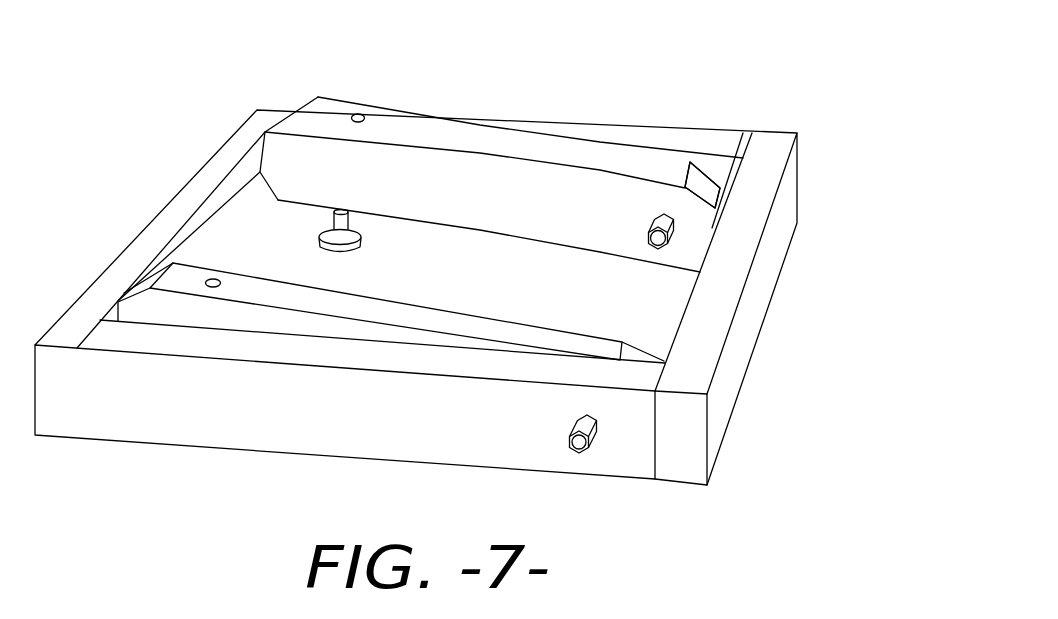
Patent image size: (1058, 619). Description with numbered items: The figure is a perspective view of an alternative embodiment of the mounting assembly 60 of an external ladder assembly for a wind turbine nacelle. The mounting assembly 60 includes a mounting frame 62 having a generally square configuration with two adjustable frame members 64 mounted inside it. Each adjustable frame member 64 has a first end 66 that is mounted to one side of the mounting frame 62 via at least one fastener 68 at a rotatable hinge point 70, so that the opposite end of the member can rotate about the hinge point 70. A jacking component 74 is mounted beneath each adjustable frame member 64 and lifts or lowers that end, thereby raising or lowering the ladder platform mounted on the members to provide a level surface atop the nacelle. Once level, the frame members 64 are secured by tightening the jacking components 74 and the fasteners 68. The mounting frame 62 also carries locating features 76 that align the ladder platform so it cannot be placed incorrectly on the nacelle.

The mounting assembly 60 is at (757, 90).
The mounting frame 62 is at (752, 191).
The adjustable frame member 64 is at (477, 177).
The first end 66 is at (658, 201).
The fastener 68 is at (300, 155).
The rotatable hinge point 70 is at (669, 244).
The jacking component 74 is at (362, 238).
The locating feature 76 is at (587, 450).